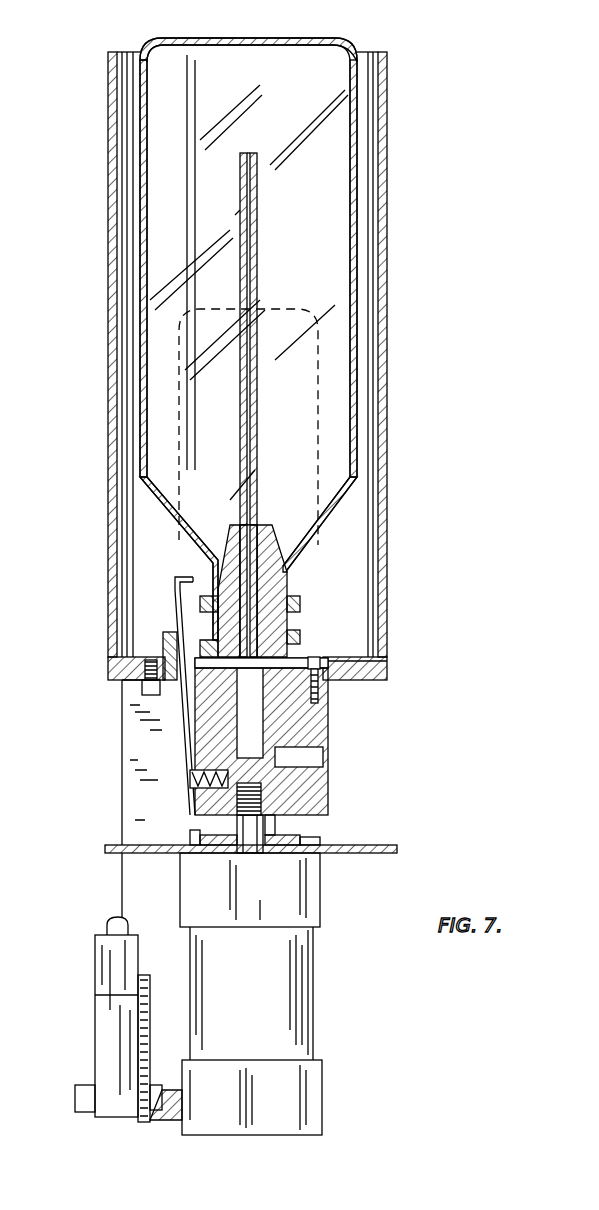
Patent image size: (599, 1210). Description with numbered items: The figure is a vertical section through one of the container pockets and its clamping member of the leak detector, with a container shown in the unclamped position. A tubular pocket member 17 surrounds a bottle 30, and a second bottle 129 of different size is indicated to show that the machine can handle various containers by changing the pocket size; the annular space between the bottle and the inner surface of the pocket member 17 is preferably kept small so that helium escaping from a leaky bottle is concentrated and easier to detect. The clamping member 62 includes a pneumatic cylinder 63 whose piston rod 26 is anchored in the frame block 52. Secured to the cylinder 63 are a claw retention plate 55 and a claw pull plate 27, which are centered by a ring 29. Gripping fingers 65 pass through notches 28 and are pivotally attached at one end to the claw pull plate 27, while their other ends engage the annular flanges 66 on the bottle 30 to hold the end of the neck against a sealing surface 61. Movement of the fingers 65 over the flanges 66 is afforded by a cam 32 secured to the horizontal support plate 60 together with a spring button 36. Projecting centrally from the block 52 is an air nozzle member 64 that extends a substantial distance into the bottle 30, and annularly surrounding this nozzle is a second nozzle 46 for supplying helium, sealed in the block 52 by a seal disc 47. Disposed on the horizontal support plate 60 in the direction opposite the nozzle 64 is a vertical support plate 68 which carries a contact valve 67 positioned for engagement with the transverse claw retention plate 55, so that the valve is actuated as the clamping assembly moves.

The tubular pocket member 17 is at (387, 257).
The piston rod 26 is at (275, 823).
The claw pull plate 27 is at (320, 838).
The notch 28 is at (190, 838).
The ring 29 is at (273, 853).
The bottle 30 is at (360, 183).
The cam 32 is at (135, 683).
The spring button 36 is at (187, 783).
The second nozzle 46 is at (278, 540).
The seal disc 47 is at (322, 698).
The frame block 52 is at (328, 728).
The claw retention plate 55 is at (397, 853).
The horizontal support plate 60 is at (380, 673).
The sealing surface 61 is at (300, 647).
The clamping member 62 is at (188, 891).
The pneumatic cylinder 63 is at (318, 1060).
The air nozzle member 64 is at (240, 182).
The gripping finger 65 is at (177, 577).
The annular flange 66 is at (300, 610).
The contact valve 67 is at (110, 1028).
The vertical support plate 68 is at (122, 738).
The bottle 129 is at (318, 353).